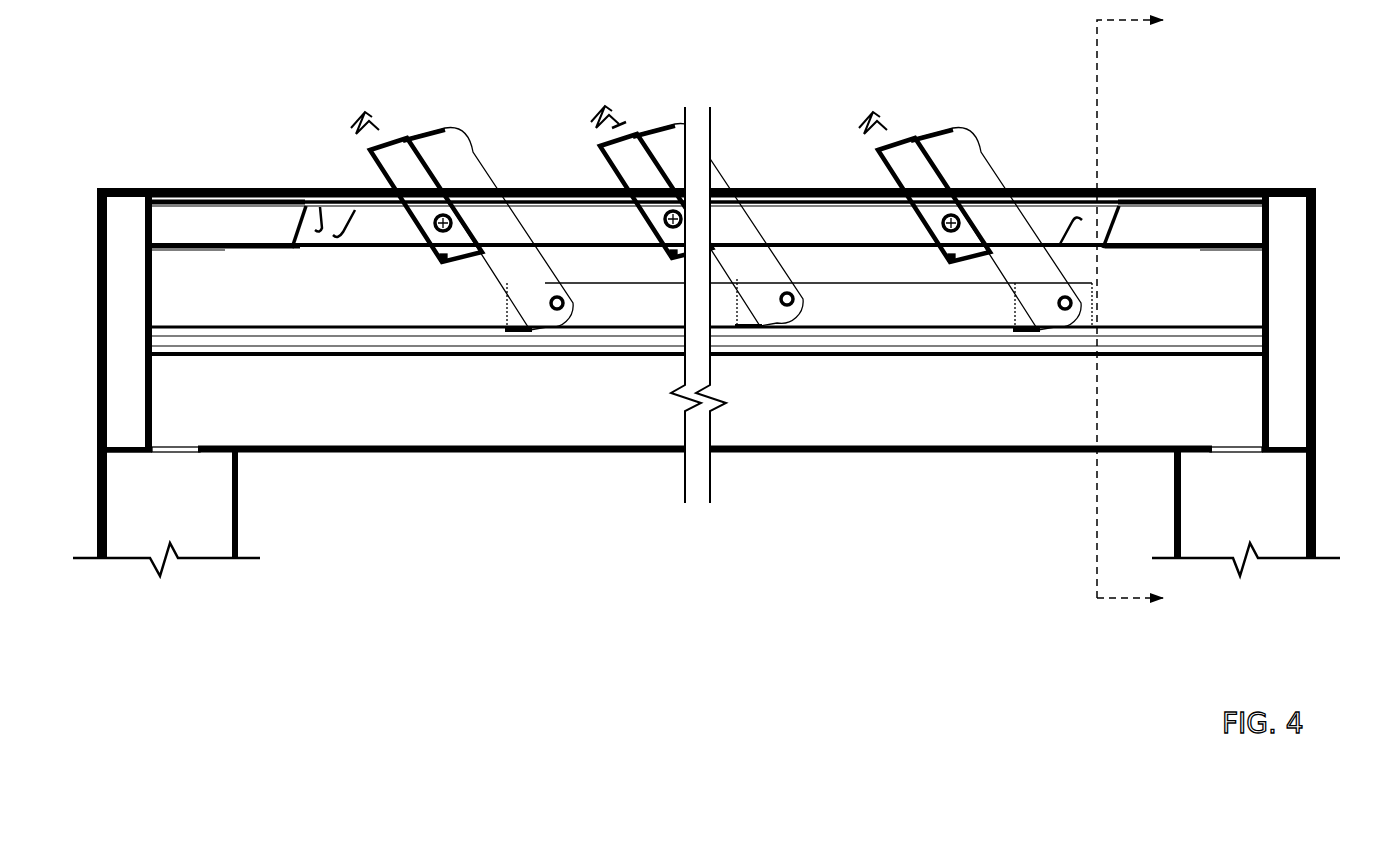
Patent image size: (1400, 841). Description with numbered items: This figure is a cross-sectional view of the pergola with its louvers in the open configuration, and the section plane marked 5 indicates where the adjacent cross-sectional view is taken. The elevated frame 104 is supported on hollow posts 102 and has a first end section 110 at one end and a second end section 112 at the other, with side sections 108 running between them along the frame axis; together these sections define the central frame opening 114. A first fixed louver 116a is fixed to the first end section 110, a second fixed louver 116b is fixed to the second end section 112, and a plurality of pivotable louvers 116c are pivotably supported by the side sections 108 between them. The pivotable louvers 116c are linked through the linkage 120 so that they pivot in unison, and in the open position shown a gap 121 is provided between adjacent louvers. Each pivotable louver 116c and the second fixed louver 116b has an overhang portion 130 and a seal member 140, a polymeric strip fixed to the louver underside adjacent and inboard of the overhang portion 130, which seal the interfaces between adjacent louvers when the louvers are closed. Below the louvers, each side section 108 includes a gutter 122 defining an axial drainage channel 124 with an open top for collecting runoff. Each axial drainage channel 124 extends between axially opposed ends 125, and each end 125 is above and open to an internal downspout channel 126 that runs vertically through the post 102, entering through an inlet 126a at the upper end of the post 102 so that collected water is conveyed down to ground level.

The post 102 is at (1318, 528).
The frame 104 is at (116, 162).
The side section 108 is at (278, 195).
The first end section 110 is at (1262, 290).
The second end section 112 is at (150, 290).
The central frame opening 114 is at (826, 222).
The first fixed louver 116a is at (1160, 205).
The second fixed louver 116b is at (214, 196).
The pivotable louver 116c is at (398, 136).
The linkage 120 is at (885, 308).
The gap 121 is at (398, 229).
The gutter 122 is at (572, 450).
The axial drainage channel 124 is at (521, 420).
The end of the axial drainage channel 125 is at (186, 436).
The internal downspout channel 126 is at (1257, 480).
The inlet 126a is at (162, 451).
The overhang portion 130 is at (345, 228).
The seal member 140 is at (312, 232).
The section line 5 is at (1138, 312).